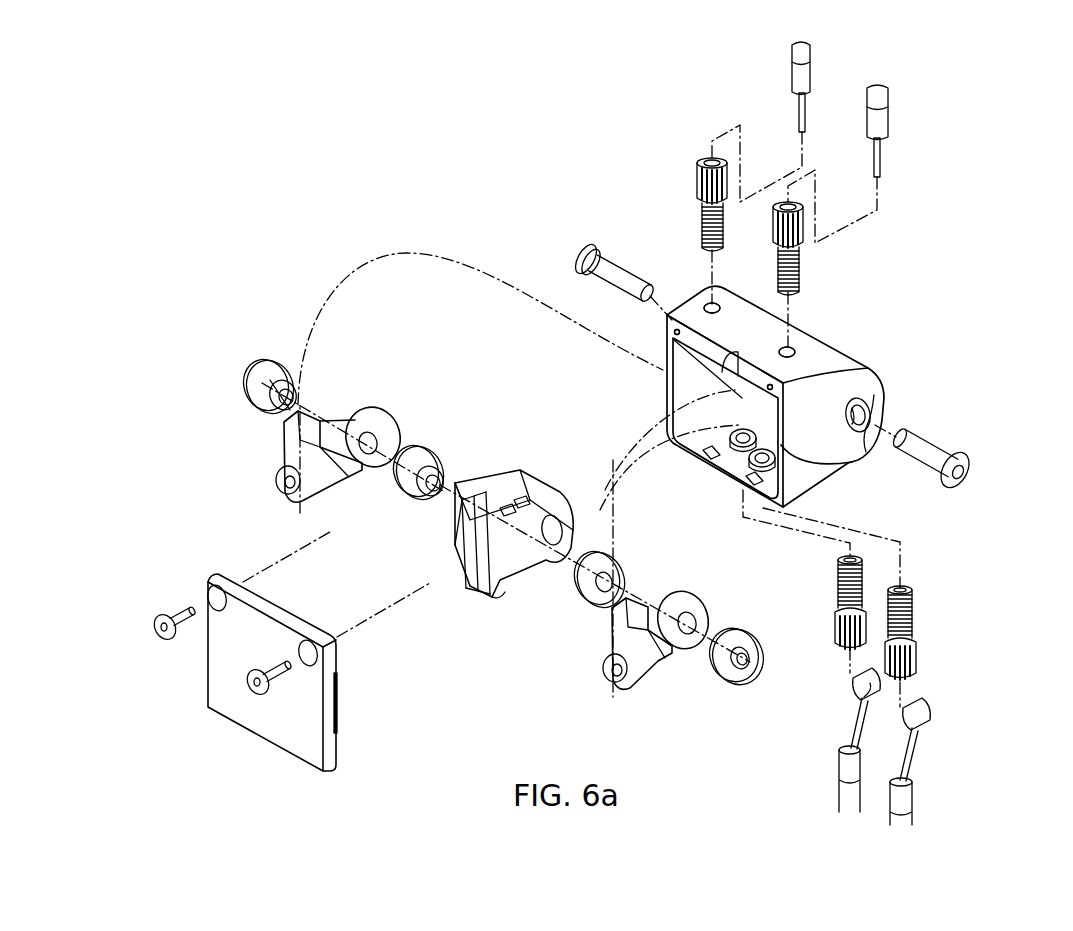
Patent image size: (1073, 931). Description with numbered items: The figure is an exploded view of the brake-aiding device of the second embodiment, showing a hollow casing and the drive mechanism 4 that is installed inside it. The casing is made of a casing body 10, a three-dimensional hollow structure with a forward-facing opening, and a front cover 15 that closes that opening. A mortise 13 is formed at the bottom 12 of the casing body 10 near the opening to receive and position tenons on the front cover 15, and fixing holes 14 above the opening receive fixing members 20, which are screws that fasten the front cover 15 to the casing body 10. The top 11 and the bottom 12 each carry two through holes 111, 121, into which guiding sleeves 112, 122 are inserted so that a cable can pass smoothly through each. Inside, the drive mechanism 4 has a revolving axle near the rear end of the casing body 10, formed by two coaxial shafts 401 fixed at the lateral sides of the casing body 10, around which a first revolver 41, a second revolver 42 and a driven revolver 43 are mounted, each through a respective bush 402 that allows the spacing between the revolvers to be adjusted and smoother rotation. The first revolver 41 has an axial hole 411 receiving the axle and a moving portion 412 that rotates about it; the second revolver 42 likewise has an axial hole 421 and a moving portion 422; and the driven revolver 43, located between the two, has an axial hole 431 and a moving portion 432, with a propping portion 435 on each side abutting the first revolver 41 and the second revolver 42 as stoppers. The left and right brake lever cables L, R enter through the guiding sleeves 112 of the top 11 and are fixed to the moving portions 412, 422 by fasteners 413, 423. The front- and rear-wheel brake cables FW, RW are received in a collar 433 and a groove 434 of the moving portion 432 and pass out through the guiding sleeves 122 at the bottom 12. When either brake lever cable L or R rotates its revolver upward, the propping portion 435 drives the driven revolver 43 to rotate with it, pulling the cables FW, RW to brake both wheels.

The drive mechanism 4 is at (192, 330).
The casing body 10 is at (877, 390).
The top 11 is at (748, 314).
The through holes 111 is at (708, 294).
The guiding sleeves 112 is at (697, 172).
The bottom 12 is at (730, 462).
The through holes 121 is at (757, 432).
The guiding sleeves 122 is at (838, 575).
The mortise 13 is at (703, 458).
The fixing holes 14 is at (672, 335).
The front cover 15 is at (265, 725).
The fixing members 20 is at (184, 607).
The shafts 401 is at (618, 270).
The bush 402 is at (272, 363).
The first revolver 41 is at (635, 647).
The axial hole 411 is at (690, 620).
The moving portion 412 is at (638, 678).
The fastener 413 is at (604, 666).
The second revolver 42 is at (300, 450).
The axial hole 421 is at (376, 440).
The moving portion 422 is at (323, 476).
The fastener 423 is at (282, 494).
The driven revolver 43 is at (482, 529).
The axial hole 431 is at (560, 530).
The moving portion 432 is at (500, 610).
The collar 433 is at (507, 523).
The groove 434 is at (462, 570).
The propping portion 435 is at (450, 510).
The right brake lever cable R is at (800, 100).
The left brake lever cable L is at (883, 153).
The front-wheel brake cable FW is at (848, 732).
The rear-wheel brake cable RW is at (910, 758).